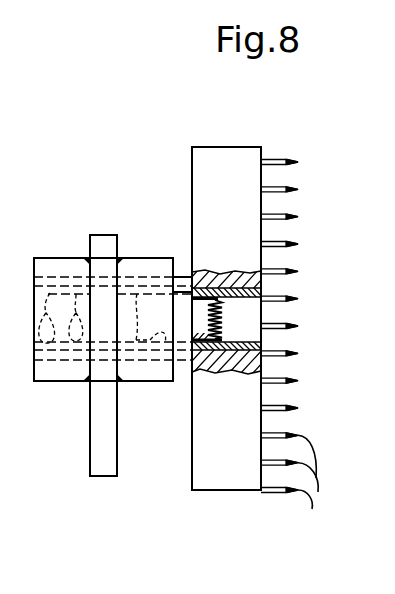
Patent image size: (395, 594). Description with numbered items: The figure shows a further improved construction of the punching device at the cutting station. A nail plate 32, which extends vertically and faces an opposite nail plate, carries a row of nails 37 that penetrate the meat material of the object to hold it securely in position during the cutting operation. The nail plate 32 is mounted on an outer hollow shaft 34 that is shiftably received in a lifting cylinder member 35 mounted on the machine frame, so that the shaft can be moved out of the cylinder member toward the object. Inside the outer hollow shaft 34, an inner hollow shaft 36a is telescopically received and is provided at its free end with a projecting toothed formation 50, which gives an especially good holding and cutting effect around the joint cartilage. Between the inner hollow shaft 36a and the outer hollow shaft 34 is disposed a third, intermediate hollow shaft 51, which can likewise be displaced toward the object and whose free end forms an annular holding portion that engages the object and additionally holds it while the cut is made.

The nail plate 32 is at (213, 175).
The hollow shaft 34 is at (186, 276).
The lifting cylinder member 35 is at (52, 372).
The inner hollow shaft 36a is at (160, 372).
The nails 37 is at (311, 509).
The toothed formation 50 is at (222, 316).
The third hollow shaft 51 is at (214, 278).